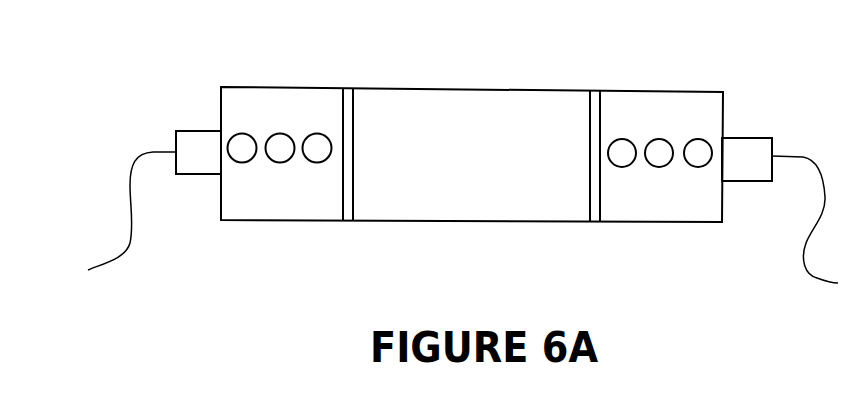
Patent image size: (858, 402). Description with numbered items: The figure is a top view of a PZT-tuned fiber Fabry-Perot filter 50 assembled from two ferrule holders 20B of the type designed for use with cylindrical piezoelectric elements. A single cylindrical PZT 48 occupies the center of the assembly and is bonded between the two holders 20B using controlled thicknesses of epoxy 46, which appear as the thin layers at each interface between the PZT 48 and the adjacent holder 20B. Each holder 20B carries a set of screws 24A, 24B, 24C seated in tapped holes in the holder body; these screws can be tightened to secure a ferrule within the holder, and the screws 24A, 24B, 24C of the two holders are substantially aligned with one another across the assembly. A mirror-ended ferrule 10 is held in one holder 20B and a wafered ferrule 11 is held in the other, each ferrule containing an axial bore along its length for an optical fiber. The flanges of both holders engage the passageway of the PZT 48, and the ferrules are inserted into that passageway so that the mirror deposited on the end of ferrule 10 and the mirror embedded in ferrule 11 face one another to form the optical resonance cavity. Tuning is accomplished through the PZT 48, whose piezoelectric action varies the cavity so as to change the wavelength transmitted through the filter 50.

The PZT-tuned FFP 50 is at (746, 18).
The mirror-ended ferrule 10 is at (197, 158).
The wafered ferrule 11 is at (755, 163).
The ferrule holder 20B is at (280, 195).
The screw 24A is at (240, 134).
The screw 24B is at (282, 134).
The screw 24C is at (320, 134).
The epoxy 46 is at (347, 213).
The cylindrical PZT 48 is at (490, 197).